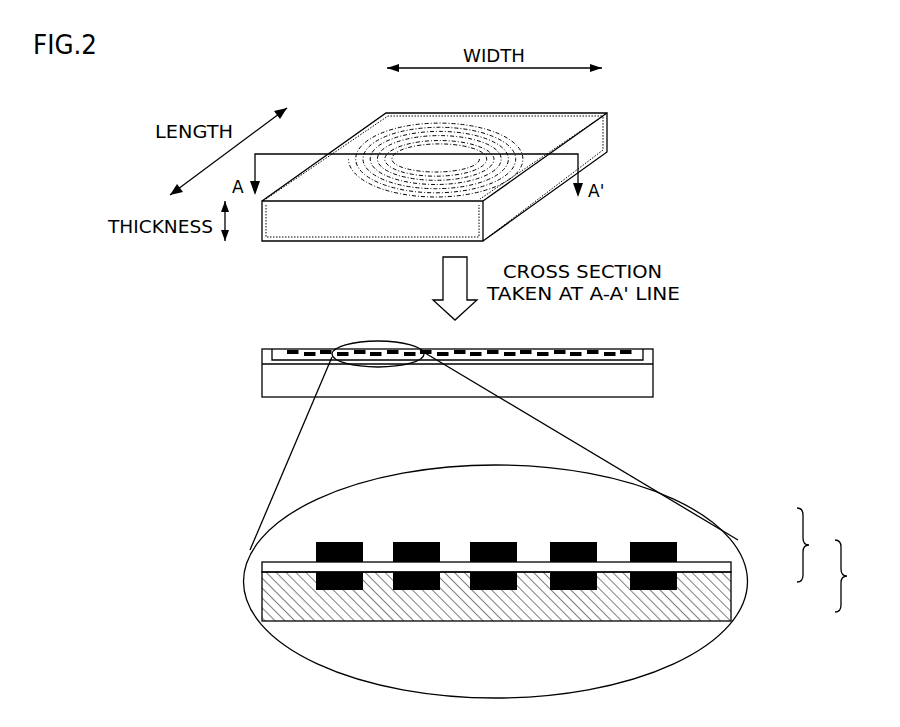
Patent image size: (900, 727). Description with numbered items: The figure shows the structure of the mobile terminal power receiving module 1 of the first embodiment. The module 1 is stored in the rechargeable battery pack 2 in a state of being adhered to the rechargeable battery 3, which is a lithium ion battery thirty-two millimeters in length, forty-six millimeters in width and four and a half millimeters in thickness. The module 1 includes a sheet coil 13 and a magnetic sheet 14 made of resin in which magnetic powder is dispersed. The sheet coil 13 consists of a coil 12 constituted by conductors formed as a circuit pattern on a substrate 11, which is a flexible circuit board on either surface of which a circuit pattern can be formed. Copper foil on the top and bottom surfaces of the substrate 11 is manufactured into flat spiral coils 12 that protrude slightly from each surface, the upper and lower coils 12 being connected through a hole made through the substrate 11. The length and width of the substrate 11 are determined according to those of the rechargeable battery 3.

The mobile terminal power receiving module 1 is at (548, 127).
The rechargeable battery pack 2 is at (630, 98).
The rechargeable battery 3 is at (313, 212).
The substrate 11 is at (710, 568).
The coil 12 is at (457, 128).
The sheet coil 13 is at (814, 545).
The magnetic sheet 14 is at (717, 605).